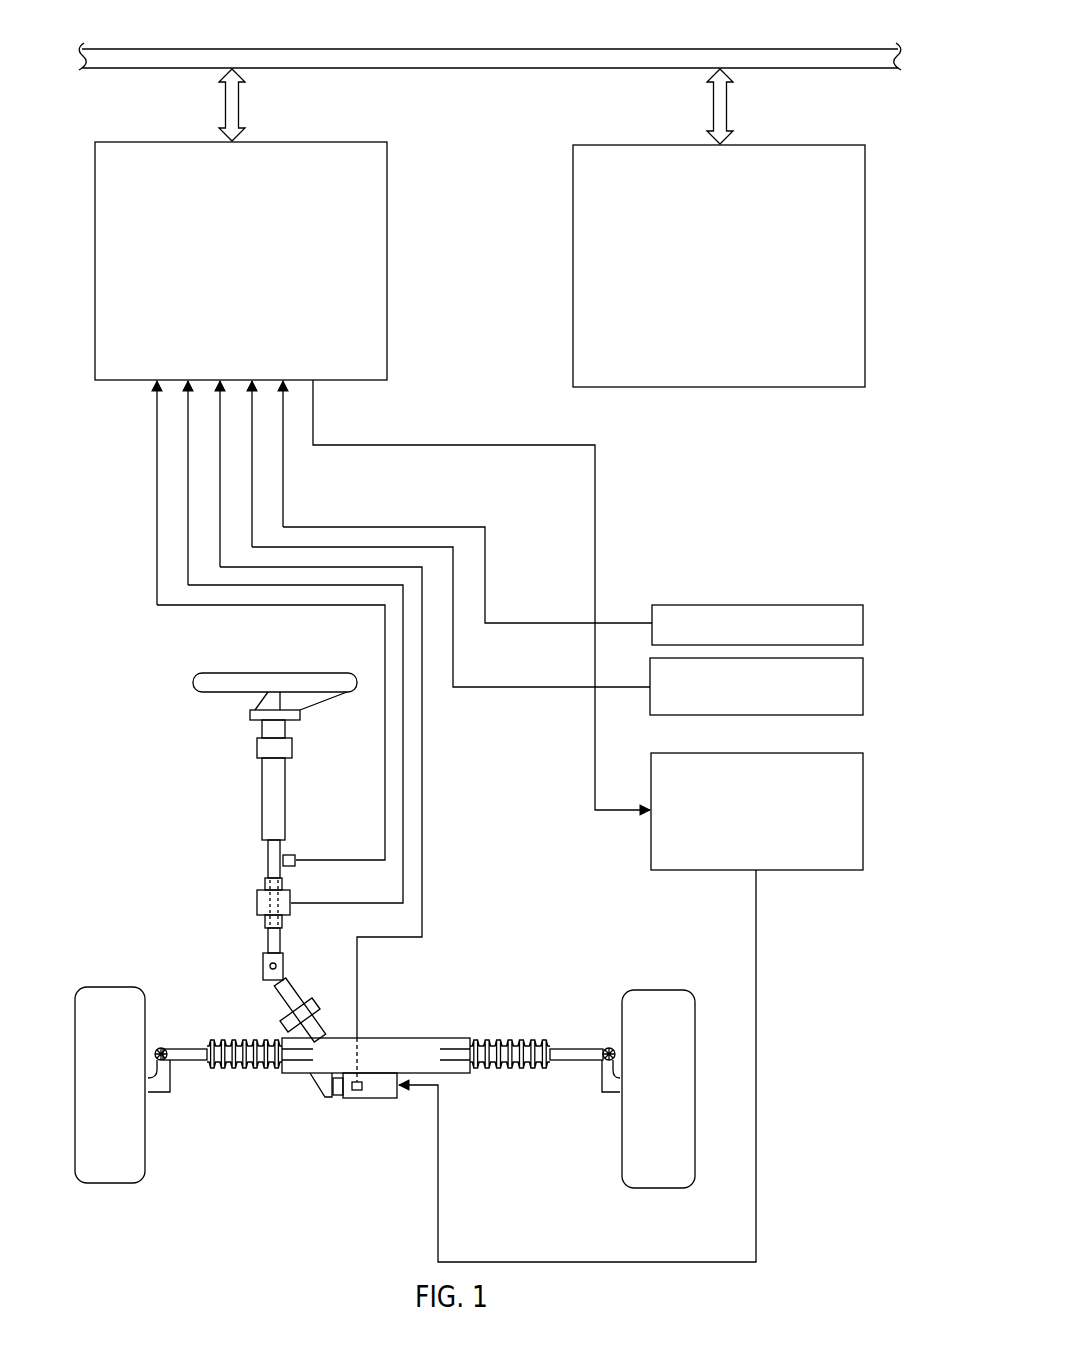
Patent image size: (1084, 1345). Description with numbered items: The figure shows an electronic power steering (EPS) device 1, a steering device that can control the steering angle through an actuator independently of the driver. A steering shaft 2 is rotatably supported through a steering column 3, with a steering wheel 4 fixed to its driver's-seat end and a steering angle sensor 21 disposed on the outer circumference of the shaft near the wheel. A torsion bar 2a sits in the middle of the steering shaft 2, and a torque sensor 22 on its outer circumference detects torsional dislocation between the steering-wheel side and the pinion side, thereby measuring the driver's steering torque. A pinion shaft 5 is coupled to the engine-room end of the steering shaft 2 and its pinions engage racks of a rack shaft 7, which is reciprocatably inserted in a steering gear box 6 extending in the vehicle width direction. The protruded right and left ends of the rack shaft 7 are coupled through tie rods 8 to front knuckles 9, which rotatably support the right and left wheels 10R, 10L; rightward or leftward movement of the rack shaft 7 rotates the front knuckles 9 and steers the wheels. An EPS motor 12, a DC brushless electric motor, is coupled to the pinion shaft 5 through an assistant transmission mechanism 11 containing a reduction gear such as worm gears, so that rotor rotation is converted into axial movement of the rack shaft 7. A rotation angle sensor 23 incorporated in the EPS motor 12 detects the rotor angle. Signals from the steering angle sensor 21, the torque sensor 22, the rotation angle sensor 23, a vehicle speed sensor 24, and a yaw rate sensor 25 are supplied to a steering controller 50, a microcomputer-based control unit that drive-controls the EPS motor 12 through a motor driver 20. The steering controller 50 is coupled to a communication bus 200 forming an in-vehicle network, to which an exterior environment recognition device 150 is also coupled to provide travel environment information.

The electronic power steering (EPS) device 1 is at (118, 683).
The steering shaft 2 is at (268, 862).
The torsion bar 2a is at (256, 903).
The steering column 3 is at (262, 791).
The steering wheel 4 is at (273, 673).
The pinion shaft 5 is at (273, 995).
The steering gear box 6 is at (390, 1038).
The rack shaft 7 is at (456, 1050).
The tie rod 8 is at (195, 1061).
The front knuckle 9 is at (150, 1097).
The right wheel 10R is at (112, 1185).
The left wheel 10L is at (660, 1190).
The assistant transmission mechanism 11 is at (315, 1085).
The electric power steering (EPS) motor 12 is at (384, 1100).
The motor driver 20 is at (865, 812).
The steering angle sensor 21 is at (293, 856).
The torque sensor 22 is at (298, 901).
The rotation angle sensor 23 is at (356, 1092).
The vehicle speed sensor 24 is at (865, 688).
The yaw rate sensor 25 is at (865, 625).
The steering controller 50 is at (307, 142).
The exterior environment recognition device 150 is at (823, 145).
The communication bus 200 is at (495, 48).